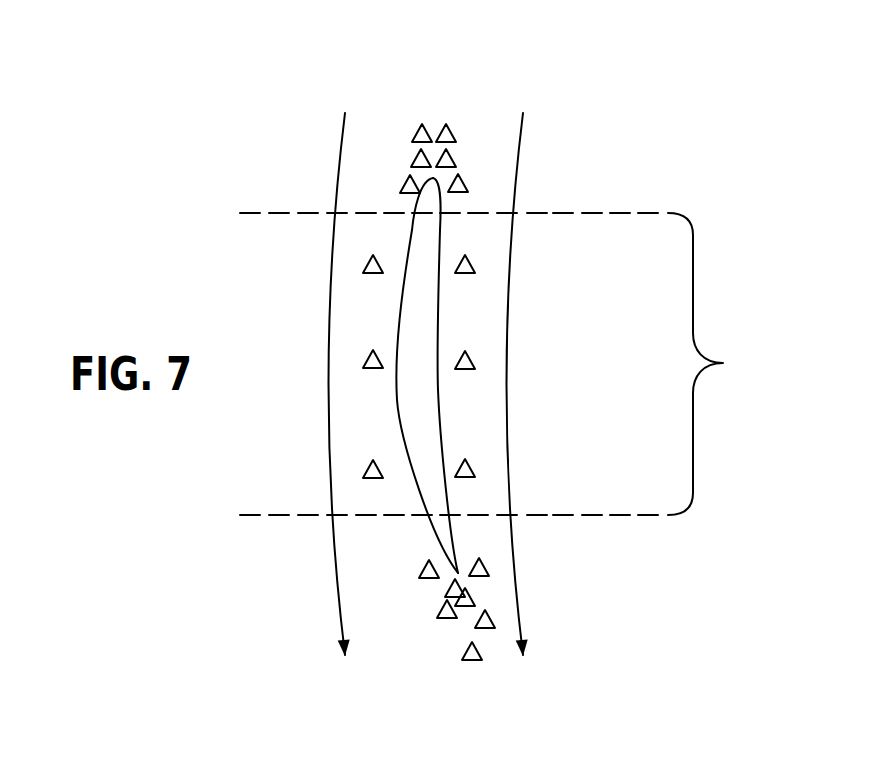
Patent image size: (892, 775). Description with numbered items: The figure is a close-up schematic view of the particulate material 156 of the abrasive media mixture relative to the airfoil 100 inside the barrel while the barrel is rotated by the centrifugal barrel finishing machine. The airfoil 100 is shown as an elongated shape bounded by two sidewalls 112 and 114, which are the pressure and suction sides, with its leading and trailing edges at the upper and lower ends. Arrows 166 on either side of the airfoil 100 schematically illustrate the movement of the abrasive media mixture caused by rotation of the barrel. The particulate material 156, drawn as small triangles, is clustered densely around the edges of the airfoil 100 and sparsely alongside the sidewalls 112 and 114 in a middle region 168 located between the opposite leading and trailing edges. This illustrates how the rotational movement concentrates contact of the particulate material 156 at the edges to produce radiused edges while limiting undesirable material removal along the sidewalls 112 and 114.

The airfoil 100 is at (428, 375).
The sidewall 112 is at (441, 430).
The sidewall 114 is at (397, 400).
The particulate material 156 is at (466, 186).
The arrows 166 is at (342, 156).
The middle region 168 is at (507, 364).